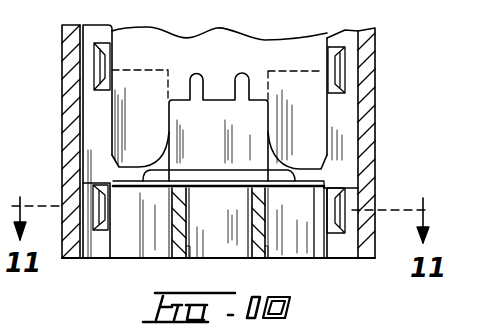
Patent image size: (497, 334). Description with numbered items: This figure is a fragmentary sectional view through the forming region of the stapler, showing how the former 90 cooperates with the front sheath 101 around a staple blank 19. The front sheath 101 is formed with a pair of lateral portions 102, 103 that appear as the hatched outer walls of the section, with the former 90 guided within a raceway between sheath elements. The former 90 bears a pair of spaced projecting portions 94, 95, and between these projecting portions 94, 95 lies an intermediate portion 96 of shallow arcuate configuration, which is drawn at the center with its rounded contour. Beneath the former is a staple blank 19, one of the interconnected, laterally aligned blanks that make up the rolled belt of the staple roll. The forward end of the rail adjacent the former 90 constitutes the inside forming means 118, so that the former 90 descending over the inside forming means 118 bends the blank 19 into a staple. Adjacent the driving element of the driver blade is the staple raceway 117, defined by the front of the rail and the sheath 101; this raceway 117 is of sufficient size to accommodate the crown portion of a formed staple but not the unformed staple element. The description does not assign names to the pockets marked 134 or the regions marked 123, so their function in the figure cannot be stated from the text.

The former 90 is at (203, 47).
The intermediate portion 96 is at (218, 90).
The lateral portion 102 is at (66, 61).
The lateral portion 103 is at (366, 84).
The retention pockets 134 is at (108, 68).
The projecting portion 94 is at (138, 138).
The projecting portion 95 is at (310, 139).
The staple blank 19 is at (320, 180).
The inside forming means 118 is at (250, 193).
The staple raceway 117 is at (166, 258).
The lower cavities 123 is at (160, 207).
The front sheath 101 is at (333, 248).